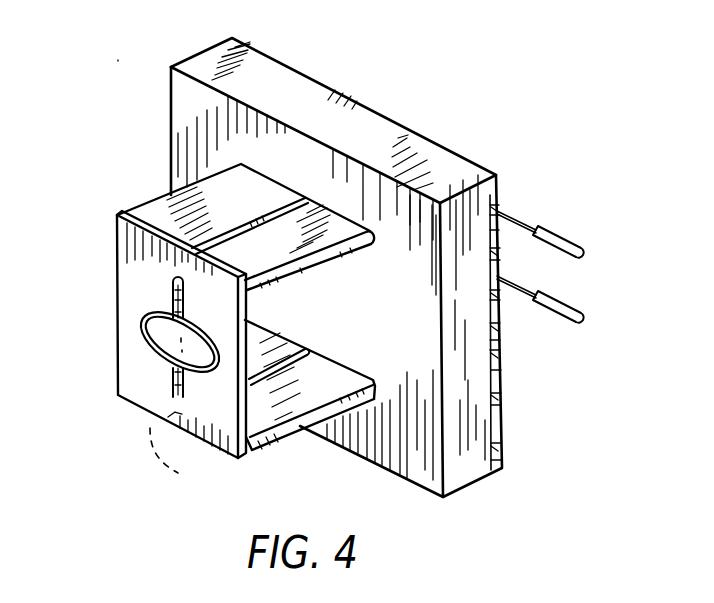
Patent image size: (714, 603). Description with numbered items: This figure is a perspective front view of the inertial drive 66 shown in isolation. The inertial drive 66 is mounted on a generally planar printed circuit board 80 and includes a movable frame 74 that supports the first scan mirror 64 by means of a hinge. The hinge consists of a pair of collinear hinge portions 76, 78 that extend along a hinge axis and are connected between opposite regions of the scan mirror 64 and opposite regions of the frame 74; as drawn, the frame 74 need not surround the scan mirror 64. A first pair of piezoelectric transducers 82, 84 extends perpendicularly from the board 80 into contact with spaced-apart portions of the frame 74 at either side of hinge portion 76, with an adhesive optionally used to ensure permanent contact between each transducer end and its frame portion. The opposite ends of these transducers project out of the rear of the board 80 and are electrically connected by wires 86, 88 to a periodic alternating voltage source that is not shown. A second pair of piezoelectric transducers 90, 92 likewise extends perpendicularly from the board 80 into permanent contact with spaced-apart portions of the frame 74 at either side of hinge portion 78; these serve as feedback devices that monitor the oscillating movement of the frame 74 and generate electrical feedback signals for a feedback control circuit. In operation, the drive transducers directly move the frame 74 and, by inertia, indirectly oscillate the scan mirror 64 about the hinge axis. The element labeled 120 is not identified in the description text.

The inertial drive 66 is at (170, 38).
The printed circuit board 80 is at (388, 118).
The piezoelectric transducer 82 is at (168, 205).
The piezoelectric transducer 84 is at (283, 255).
The movable frame 74 is at (130, 268).
The hinge portion 76 is at (173, 303).
The hinge portion 78 is at (186, 389).
The first scan mirror 64 is at (167, 343).
The alignment mark 120 is at (183, 457).
The piezoelectric transducer 90 is at (302, 333).
The piezoelectric transducer 92 is at (272, 445).
The wire 86 is at (556, 240).
The wire 88 is at (556, 315).